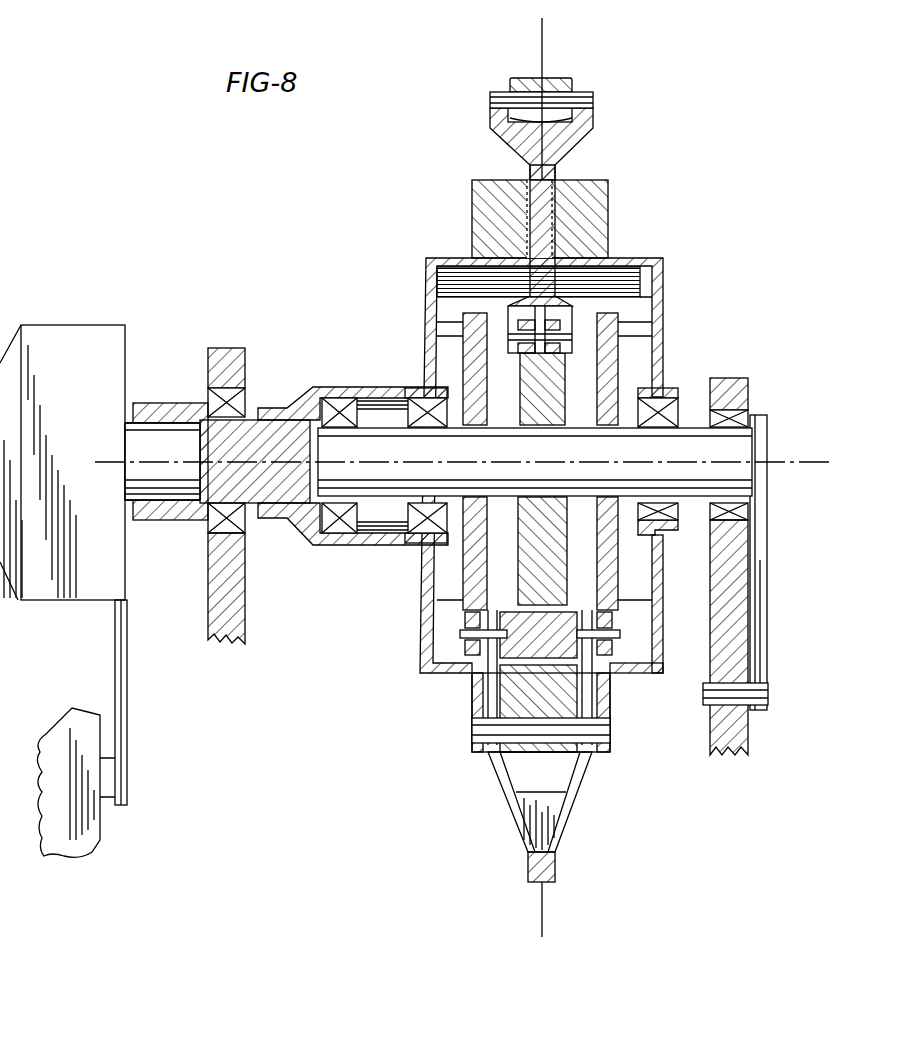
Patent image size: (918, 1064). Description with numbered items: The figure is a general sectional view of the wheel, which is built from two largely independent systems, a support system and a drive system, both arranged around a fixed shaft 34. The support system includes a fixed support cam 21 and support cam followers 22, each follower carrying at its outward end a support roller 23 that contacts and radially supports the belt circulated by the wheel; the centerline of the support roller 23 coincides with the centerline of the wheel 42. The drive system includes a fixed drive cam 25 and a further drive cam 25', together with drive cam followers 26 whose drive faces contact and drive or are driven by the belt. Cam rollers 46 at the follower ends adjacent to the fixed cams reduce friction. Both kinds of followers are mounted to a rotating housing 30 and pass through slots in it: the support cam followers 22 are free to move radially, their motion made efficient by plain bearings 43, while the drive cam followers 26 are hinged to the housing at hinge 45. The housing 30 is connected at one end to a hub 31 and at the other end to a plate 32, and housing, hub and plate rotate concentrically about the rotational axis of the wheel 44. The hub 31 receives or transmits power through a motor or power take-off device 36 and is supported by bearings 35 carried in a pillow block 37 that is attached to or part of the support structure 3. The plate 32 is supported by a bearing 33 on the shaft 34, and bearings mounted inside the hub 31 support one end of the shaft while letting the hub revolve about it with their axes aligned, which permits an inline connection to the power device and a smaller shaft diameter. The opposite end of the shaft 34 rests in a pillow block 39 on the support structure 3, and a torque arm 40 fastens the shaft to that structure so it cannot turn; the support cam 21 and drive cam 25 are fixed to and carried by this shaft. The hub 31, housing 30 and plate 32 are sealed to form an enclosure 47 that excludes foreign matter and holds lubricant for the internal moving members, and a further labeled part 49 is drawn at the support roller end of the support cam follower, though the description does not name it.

The support structure 3 is at (60, 856).
The fixed support cam 21 is at (616, 584).
The support cam follower 22 is at (502, 152).
The support roller 23 is at (572, 85).
The fixed drive cam 25 is at (413, 433).
The bearing 25' is at (675, 421).
The drive cam follower 26 is at (510, 824).
The rotating housing 30 is at (602, 242).
The hub 31 is at (336, 386).
The plate 32 is at (666, 292).
The bearing 33 is at (688, 420).
The shaft 34 is at (632, 470).
The bearing 35 is at (250, 537).
The motor or power take-off device 36 is at (102, 324).
The pillow block 37 is at (206, 617).
The pillow block 39 is at (750, 752).
The torque arm 40 is at (764, 602).
The centerline of the wheel 42 is at (545, 45).
The plain bearing 43 is at (576, 178).
The rotational axis of the wheel 44 is at (810, 462).
The hinge 45 is at (472, 733).
The cam roller 46 is at (584, 264).
The enclosure 47 is at (462, 298).
The plate 49 is at (595, 100).